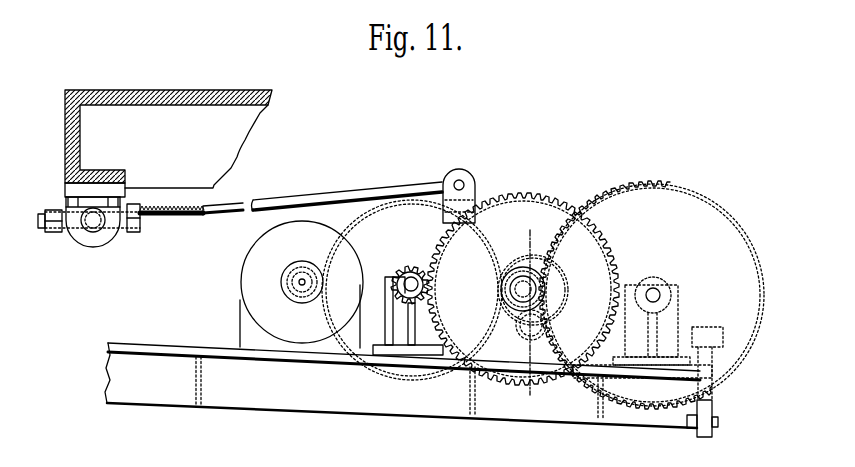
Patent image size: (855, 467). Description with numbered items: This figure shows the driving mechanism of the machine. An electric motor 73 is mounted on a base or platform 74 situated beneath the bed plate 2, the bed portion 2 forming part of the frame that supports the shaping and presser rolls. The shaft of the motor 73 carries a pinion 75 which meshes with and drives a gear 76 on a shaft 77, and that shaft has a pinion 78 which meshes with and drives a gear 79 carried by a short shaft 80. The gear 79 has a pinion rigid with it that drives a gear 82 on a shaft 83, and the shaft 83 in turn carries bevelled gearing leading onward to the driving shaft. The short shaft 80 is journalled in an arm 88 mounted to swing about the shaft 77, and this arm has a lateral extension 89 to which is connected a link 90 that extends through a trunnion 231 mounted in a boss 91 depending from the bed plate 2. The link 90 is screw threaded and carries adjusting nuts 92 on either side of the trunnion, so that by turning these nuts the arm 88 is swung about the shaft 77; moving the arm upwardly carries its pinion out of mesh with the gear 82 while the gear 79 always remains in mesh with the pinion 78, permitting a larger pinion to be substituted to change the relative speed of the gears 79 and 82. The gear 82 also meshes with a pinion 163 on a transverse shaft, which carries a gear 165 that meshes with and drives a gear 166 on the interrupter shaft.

The bed portion 2 is at (143, 90).
The boss 91 is at (95, 240).
The trunnion 231 is at (100, 232).
The adjusting nuts 92 is at (52, 234).
The link 90 is at (241, 205).
The gear 76 is at (387, 208).
The lateral extension 89 is at (476, 197).
The electric motor 73 is at (252, 257).
The pinion 75 is at (302, 261).
The base or platform 74 is at (183, 349).
The shaft 77 is at (407, 283).
The pinion 78 is at (411, 278).
The arm 88 is at (485, 302).
The gear 79 is at (558, 200).
The short shaft 80 is at (525, 290).
The gear 166 is at (538, 232).
The gear 165 is at (567, 318).
The pinion 163 is at (535, 324).
The gear 82 is at (660, 180).
The shaft 83 is at (656, 292).